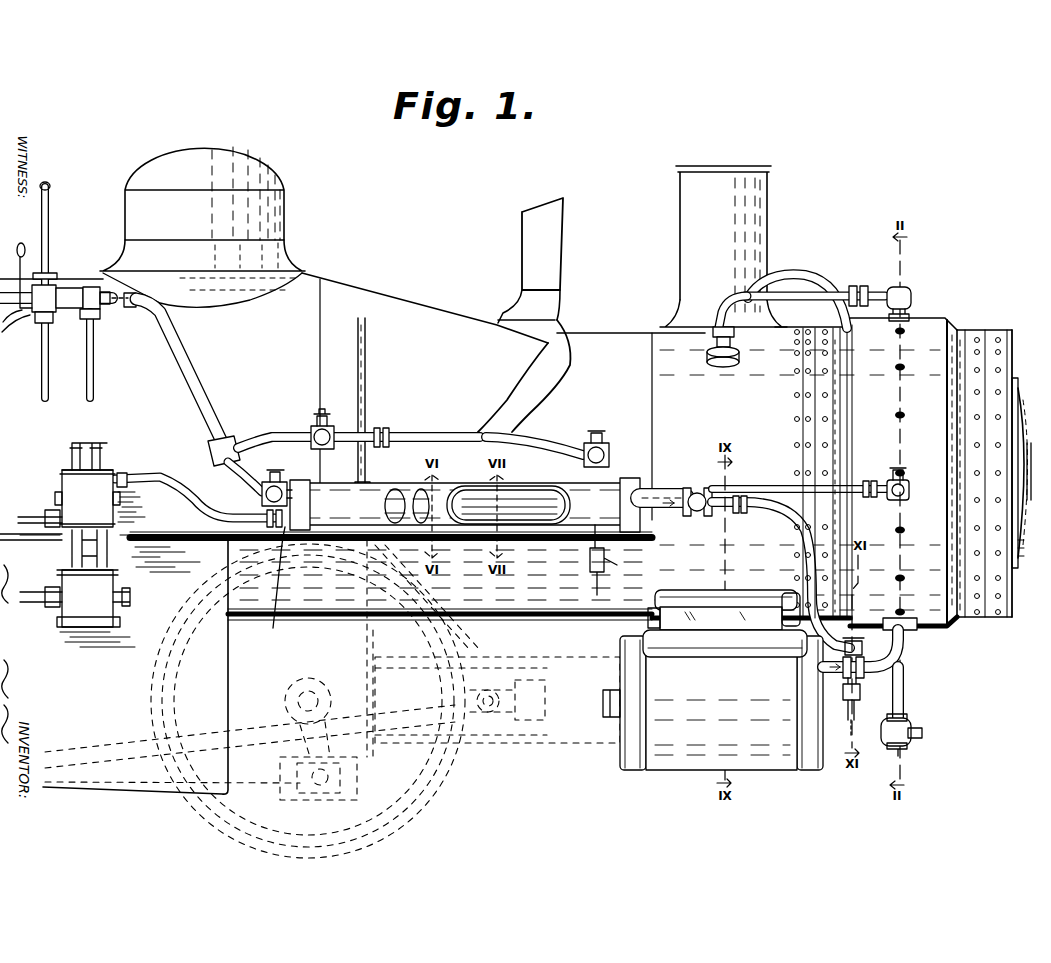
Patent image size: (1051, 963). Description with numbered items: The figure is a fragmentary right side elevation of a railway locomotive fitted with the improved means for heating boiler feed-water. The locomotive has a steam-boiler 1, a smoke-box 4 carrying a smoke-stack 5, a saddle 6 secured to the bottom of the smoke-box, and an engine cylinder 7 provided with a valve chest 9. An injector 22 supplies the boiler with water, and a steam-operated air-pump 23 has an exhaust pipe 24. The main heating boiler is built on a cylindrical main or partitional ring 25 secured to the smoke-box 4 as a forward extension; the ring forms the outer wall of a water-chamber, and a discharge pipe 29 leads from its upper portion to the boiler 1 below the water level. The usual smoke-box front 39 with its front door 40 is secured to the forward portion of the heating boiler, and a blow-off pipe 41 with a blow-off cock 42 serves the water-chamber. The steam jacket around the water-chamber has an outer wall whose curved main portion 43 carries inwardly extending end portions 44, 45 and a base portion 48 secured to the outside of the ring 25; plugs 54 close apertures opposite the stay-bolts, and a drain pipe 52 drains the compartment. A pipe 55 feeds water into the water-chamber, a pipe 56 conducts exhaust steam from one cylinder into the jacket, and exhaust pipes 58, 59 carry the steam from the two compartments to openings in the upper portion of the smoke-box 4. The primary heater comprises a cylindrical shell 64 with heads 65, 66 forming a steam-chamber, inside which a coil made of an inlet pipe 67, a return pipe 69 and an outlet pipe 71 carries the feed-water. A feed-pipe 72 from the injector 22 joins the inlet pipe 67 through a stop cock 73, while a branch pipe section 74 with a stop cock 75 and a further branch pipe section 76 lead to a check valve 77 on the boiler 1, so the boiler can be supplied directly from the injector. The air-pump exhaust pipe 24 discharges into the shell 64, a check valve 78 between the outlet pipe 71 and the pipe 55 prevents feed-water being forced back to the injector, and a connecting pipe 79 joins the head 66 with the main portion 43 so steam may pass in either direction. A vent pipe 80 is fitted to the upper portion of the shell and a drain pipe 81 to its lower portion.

The steam-boiler 1 is at (578, 381).
The smoke-box 4 is at (669, 348).
The smoke-stack 5 is at (680, 224).
The saddle 6 is at (786, 592).
The engine cylinder 7 is at (670, 770).
The valve chest 9 is at (700, 588).
The injector 22 is at (68, 292).
The air-pump 23 is at (62, 481).
The exhaust pipe 24 is at (152, 477).
The main or partitional ring 25 is at (803, 404).
The discharge pipe 29 is at (797, 335).
The smoke-box front 39 is at (1009, 344).
The front door 40 is at (1016, 388).
The blow-off pipe 41 is at (904, 694).
The blow-off cock 42 is at (911, 727).
The curved main portion 43 is at (941, 320).
The end portion 44 is at (790, 334).
The end portion 45 is at (964, 330).
The base portion 48 is at (973, 407).
The drain pipe 52 is at (843, 647).
The plug 54 is at (897, 414).
The pipe 55 is at (797, 525).
The pipe 56 is at (870, 680).
The exhaust pipe 58 is at (876, 287).
The exhaust pipe 59 is at (797, 279).
The cylindrical shell 64 is at (334, 492).
The head 65 is at (271, 587).
The head 66 is at (644, 525).
The inlet pipe 67 is at (287, 493).
The return pipe 69 is at (470, 517).
The outlet pipe 71 is at (540, 508).
The feed-pipe 72 is at (121, 308).
The stop cock 73 is at (265, 487).
The branch pipe section 74 is at (271, 432).
The stop cock 75 is at (316, 424).
The branch pipe section 76 is at (506, 433).
The check valve 77 is at (608, 447).
The check valve 78 is at (695, 516).
The connecting pipe 79 is at (769, 485).
The vent pipe 80 is at (396, 445).
The drain pipe 81 is at (605, 548).